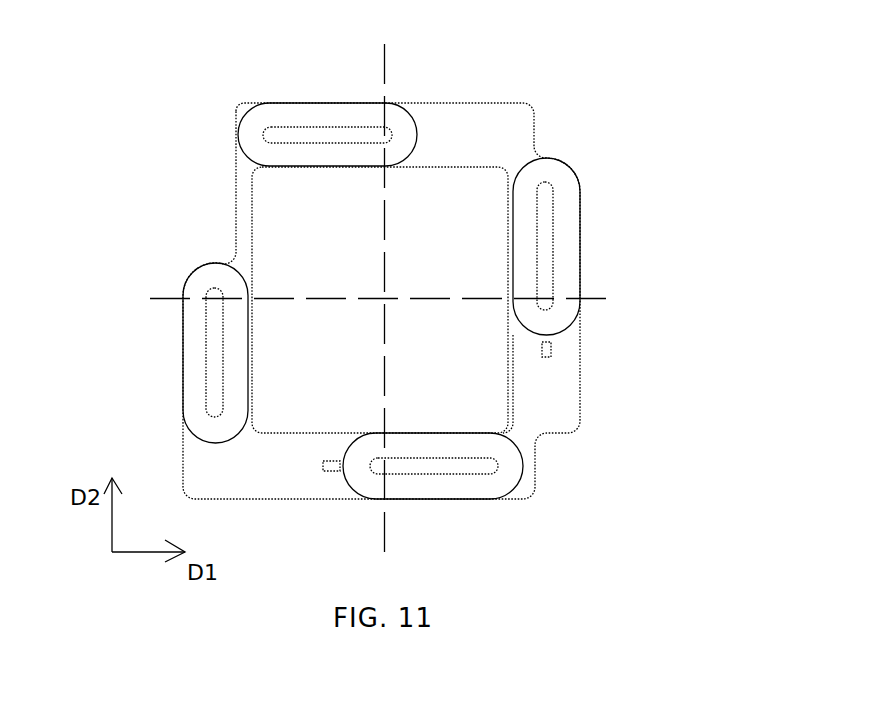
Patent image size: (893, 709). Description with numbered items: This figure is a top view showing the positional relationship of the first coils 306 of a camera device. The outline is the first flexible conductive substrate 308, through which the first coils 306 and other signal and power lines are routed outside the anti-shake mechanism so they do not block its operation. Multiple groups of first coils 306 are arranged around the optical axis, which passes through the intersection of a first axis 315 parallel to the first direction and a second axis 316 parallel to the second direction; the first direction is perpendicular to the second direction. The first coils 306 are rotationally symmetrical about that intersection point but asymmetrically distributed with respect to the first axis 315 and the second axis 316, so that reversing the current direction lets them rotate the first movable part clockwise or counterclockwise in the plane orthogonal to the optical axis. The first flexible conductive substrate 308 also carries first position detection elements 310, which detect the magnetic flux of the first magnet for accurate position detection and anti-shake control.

The first coil 306 is at (563, 228).
The first flexible conductive substrate 308 is at (531, 105).
The first position detection element 310 is at (551, 349).
The first axis 315 is at (609, 299).
The second axis 316 is at (384, 88).